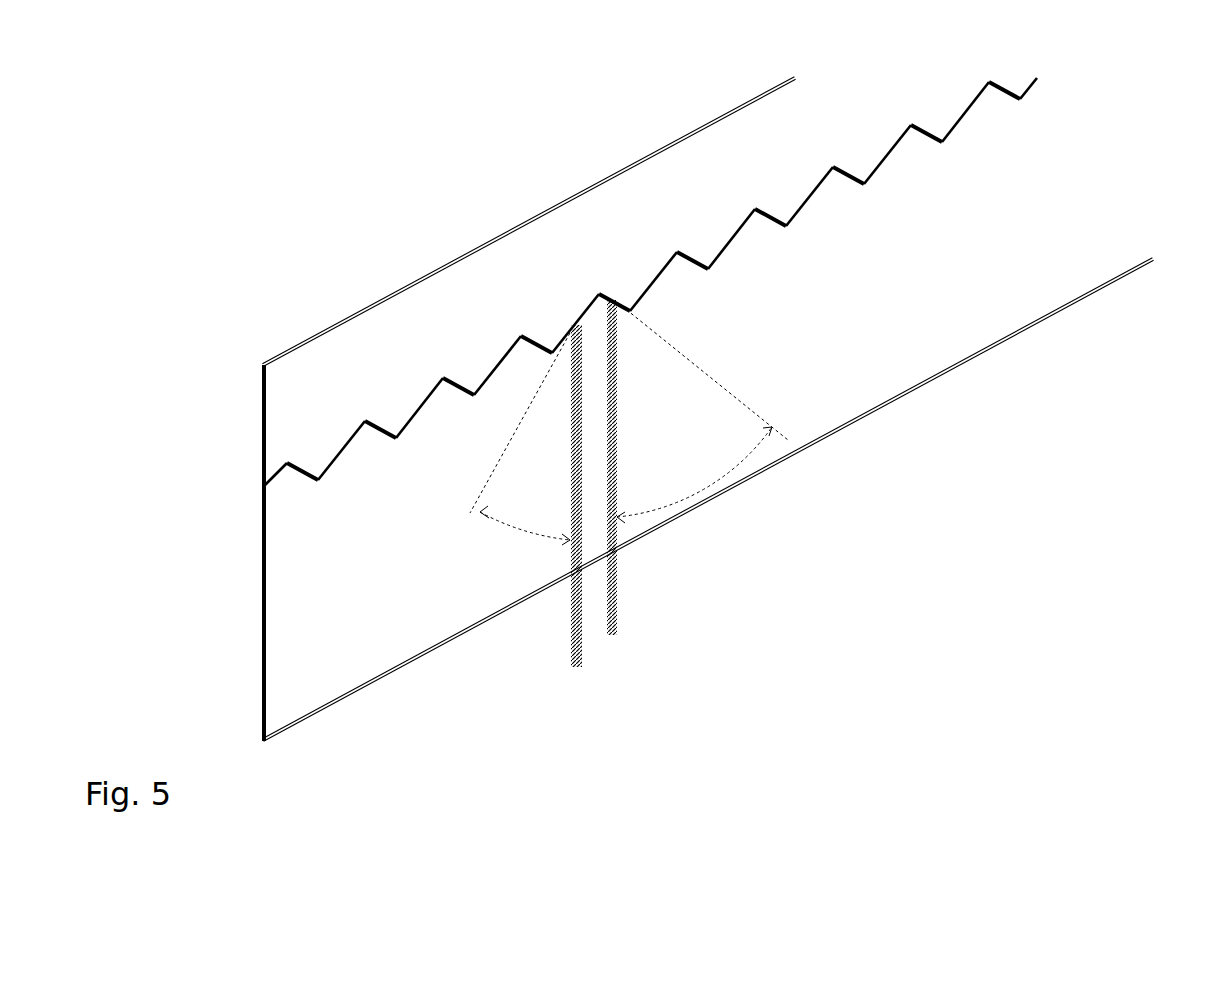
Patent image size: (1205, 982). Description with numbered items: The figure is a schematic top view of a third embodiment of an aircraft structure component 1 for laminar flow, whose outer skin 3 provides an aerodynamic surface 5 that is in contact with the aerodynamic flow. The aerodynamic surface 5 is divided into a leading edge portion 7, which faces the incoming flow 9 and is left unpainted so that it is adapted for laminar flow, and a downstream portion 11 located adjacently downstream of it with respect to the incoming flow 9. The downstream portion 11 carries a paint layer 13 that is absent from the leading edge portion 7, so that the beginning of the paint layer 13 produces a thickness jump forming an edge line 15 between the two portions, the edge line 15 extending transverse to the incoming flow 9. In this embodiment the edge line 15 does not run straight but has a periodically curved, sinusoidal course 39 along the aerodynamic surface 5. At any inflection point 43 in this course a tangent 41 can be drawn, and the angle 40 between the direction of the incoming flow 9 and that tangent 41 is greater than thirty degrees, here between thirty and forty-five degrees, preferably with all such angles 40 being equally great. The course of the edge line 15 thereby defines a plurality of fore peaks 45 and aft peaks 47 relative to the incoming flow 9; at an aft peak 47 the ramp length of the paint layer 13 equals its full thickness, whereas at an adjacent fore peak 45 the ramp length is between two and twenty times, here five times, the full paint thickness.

The aircraft structure component 1 is at (988, 324).
The outer skin 3 is at (1019, 223).
The aerodynamic surface 5 is at (862, 298).
The leading edge portion 7 is at (339, 603).
The incoming flow 9 is at (577, 647).
The downstream portion 11 is at (353, 383).
The paint layer 13 is at (683, 203).
The edge line 15 is at (498, 365).
The sinusoidal course 39 is at (835, 167).
The angle 40 is at (512, 522).
The tangent 41 is at (493, 475).
The inflection point 43 is at (573, 321).
The fore peak 45 is at (553, 352).
The aft peak 47 is at (597, 294).